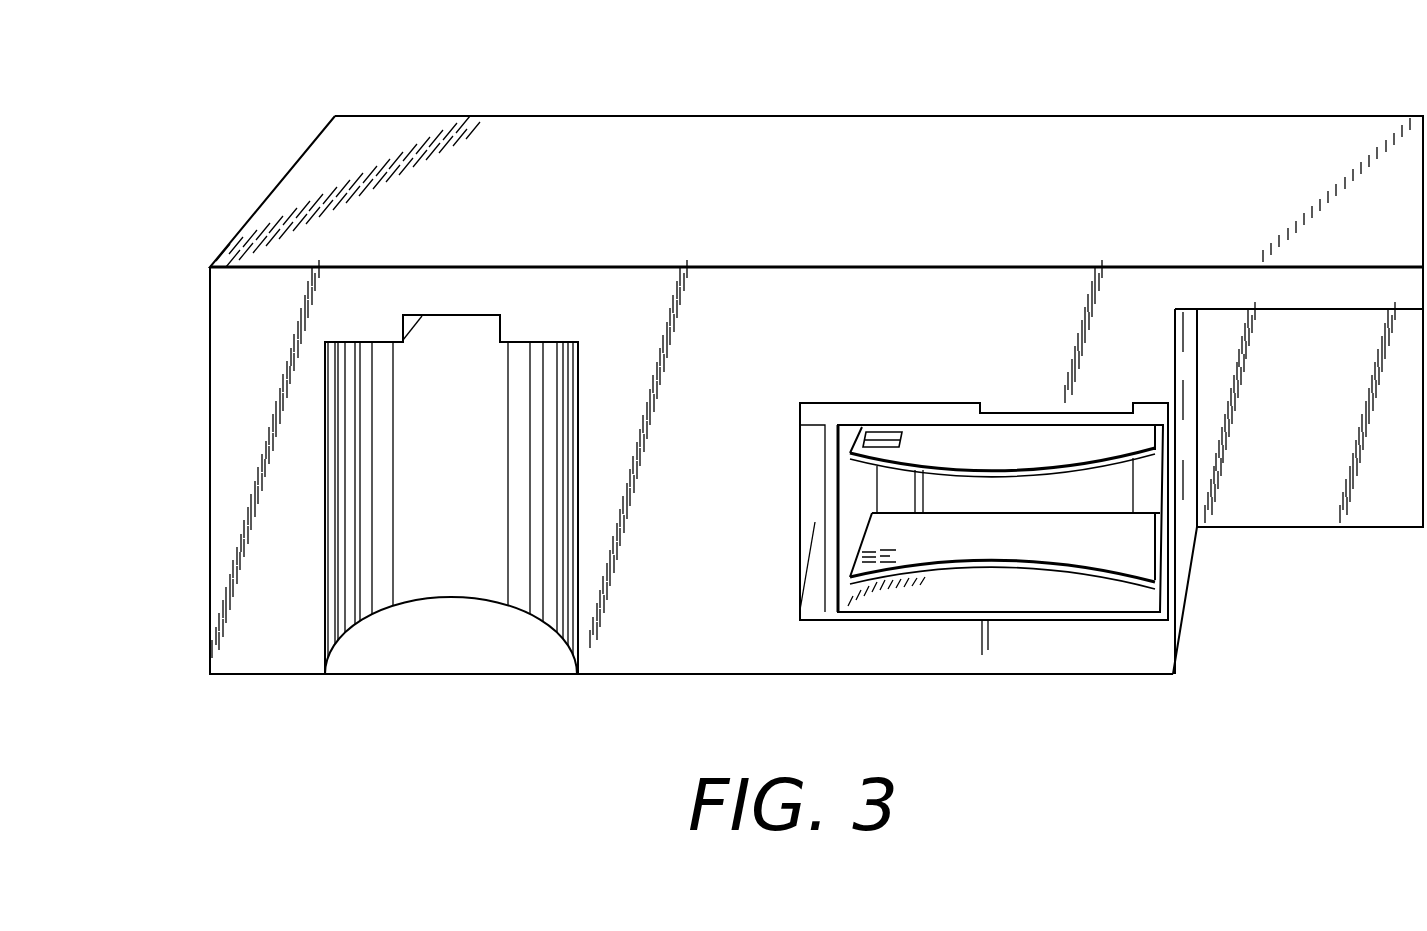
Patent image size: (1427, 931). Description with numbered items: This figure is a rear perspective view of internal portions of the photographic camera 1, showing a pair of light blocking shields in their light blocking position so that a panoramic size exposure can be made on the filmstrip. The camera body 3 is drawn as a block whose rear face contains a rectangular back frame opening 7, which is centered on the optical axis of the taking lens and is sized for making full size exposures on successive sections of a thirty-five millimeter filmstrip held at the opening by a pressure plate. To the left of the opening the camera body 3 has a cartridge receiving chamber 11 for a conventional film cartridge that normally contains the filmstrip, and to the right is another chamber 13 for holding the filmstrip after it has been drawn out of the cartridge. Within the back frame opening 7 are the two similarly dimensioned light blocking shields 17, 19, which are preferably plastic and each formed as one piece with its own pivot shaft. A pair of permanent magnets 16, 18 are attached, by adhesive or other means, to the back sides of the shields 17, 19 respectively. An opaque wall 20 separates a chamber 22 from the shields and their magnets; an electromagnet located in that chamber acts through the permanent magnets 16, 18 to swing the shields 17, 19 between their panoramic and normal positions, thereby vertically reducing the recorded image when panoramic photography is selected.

The photographic camera 1 is at (250, 140).
The camera body 3 is at (210, 362).
The back frame opening 7 is at (1025, 588).
The cartridge receiving chamber 11 is at (420, 502).
The chamber 13 is at (1302, 435).
The permanent magnet 16 is at (887, 432).
The light blocking shield 17 is at (1088, 445).
The permanent magnet 18 is at (900, 550).
The light blocking shield 19 is at (1074, 535).
The opaque wall 20 is at (832, 462).
The chamber 22 is at (815, 520).